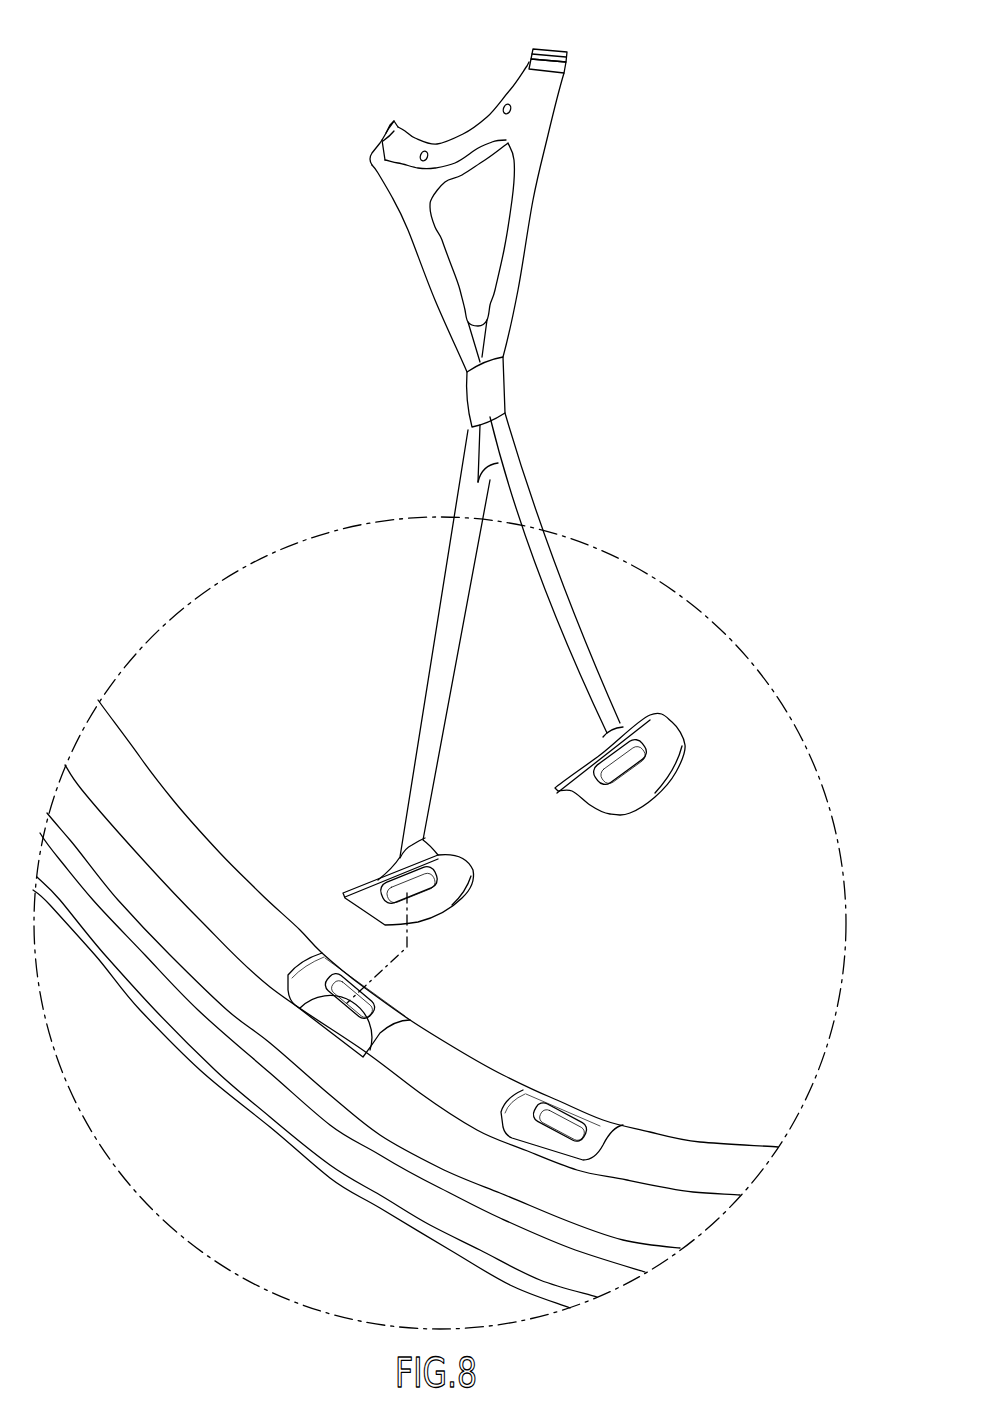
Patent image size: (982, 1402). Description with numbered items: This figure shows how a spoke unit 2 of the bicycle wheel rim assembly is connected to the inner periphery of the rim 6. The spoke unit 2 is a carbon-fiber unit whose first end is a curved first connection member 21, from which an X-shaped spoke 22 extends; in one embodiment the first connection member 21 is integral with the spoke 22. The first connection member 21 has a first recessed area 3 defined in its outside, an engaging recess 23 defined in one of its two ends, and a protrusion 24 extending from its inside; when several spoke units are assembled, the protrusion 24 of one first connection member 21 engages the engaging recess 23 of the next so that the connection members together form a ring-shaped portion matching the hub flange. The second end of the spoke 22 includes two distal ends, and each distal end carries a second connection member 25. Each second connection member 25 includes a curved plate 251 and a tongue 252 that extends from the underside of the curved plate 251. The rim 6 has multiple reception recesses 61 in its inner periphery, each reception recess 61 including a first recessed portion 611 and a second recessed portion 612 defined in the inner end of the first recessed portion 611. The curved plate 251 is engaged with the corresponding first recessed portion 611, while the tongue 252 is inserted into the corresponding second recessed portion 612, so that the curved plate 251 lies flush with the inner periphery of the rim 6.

The spoke unit 2 is at (532, 376).
The first connection member 21 is at (460, 118).
The X-shaped spoke 22 is at (510, 250).
The engaging recess 23 is at (563, 68).
The protrusion 24 is at (396, 148).
The first recessed area 3 is at (391, 130).
The second connection member 25 is at (327, 735).
The curved plate 251 is at (373, 883).
The tongue 252 is at (343, 903).
The rim 6 is at (450, 1097).
The reception recess 61 is at (222, 1178).
The first recessed portion 611 is at (370, 1050).
The second recessed portion 612 is at (300, 1007).